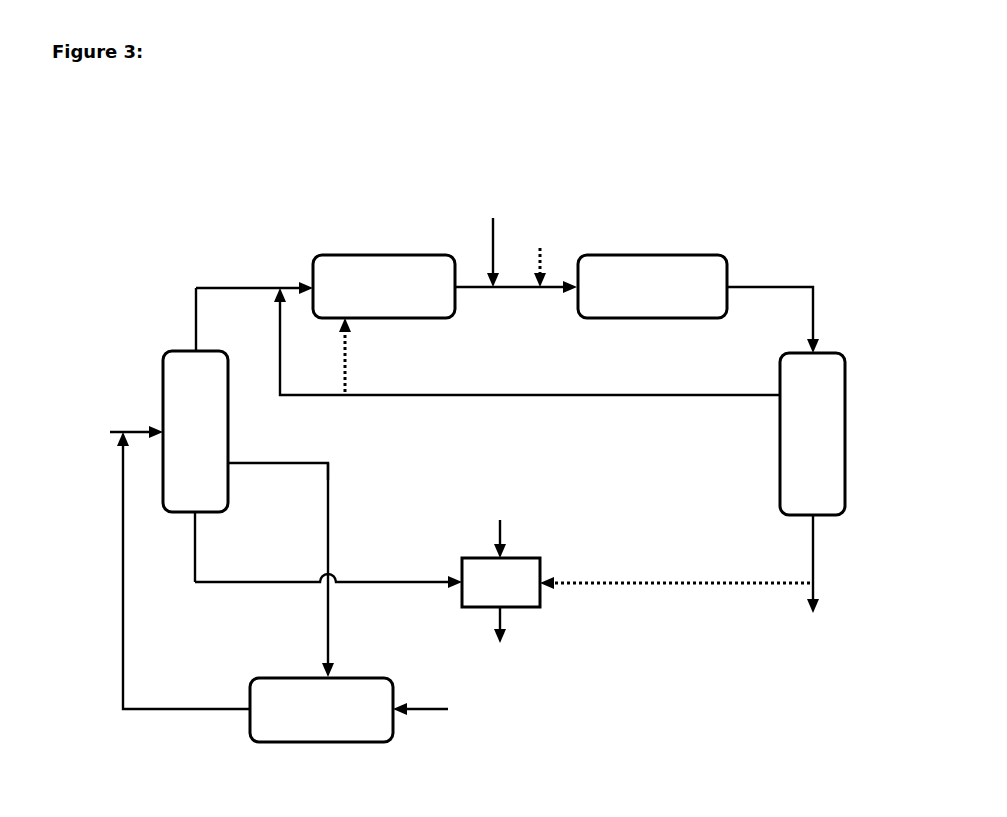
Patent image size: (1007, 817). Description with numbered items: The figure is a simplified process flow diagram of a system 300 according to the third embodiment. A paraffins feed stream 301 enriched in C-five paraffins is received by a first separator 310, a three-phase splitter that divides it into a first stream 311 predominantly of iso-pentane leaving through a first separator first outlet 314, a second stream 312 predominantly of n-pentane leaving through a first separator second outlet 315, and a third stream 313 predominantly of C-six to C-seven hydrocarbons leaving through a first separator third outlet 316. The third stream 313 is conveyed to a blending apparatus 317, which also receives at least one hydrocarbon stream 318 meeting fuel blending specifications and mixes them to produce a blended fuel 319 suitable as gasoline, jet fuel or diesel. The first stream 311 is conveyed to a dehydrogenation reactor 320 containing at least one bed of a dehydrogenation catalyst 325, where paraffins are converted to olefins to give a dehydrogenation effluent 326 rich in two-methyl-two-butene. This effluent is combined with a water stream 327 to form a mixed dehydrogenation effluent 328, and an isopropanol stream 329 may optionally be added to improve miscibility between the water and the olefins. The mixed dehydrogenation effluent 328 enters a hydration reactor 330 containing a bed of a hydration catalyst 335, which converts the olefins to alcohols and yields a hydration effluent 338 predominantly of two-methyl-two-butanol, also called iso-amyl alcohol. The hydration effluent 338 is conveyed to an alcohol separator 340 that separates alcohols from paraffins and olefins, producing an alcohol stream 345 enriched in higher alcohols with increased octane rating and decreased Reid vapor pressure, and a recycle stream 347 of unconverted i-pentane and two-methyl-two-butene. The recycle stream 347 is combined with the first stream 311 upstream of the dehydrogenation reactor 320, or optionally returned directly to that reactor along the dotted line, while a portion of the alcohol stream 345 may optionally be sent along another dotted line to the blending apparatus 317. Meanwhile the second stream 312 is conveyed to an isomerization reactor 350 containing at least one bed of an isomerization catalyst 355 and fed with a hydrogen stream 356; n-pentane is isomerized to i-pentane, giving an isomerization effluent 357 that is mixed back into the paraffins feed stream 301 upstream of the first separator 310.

The system 300 is at (154, 190).
The paraffins feed stream 301 is at (116, 433).
The first separator 310 is at (163, 361).
The first stream 311 is at (206, 286).
The second stream 312 is at (333, 522).
The third stream 313 is at (193, 566).
The first separator first outlet 314 is at (204, 347).
The first separator second outlet 315 is at (233, 462).
The first separator third outlet 316 is at (200, 516).
The blending apparatus 317 is at (501, 582).
The hydrocarbon stream 318 is at (500, 528).
The blended fuel 319 is at (500, 638).
The dehydrogenation reactor 320 is at (405, 253).
The dehydrogenation catalyst 325 is at (392, 289).
The dehydrogenation effluent 326 is at (478, 296).
The water stream 327 is at (497, 241).
The mixed dehydrogenation effluent 328 is at (520, 296).
The isopropanol stream 329 is at (542, 257).
The hydration reactor 330 is at (655, 253).
The hydration catalyst 335 is at (637, 289).
The hydration effluent 338 is at (804, 285).
The alcohol separator 340 is at (780, 453).
The alcohol stream 345 is at (812, 580).
The recycle stream 347 is at (562, 393).
The isomerization reactor 350 is at (296, 675).
The isomerization catalyst 355 is at (327, 711).
The hydrogen stream 356 is at (442, 711).
The isomerization effluent 357 is at (200, 712).